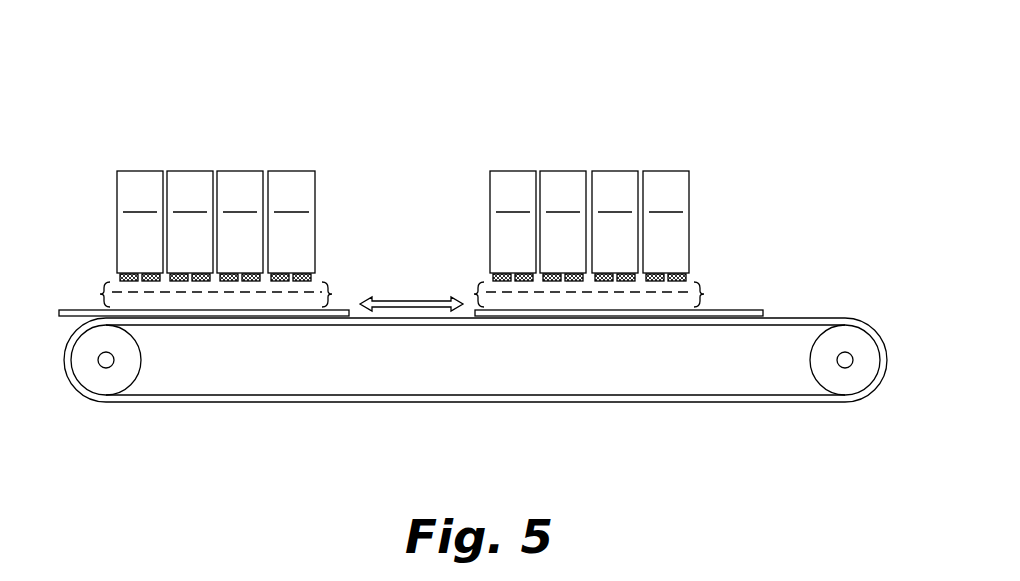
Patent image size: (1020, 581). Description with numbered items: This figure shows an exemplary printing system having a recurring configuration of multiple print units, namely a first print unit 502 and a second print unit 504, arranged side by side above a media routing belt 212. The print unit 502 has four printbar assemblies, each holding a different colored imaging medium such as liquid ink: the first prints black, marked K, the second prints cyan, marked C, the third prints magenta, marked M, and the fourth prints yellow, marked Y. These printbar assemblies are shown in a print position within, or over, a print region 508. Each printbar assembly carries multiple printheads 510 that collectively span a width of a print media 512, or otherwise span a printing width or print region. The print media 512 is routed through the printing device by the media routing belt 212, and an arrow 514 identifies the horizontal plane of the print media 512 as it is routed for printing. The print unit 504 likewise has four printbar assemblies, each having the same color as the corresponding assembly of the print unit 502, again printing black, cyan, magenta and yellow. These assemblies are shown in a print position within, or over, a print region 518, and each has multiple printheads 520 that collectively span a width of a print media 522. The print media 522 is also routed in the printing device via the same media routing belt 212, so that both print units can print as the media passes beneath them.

The media routing belt 212 is at (175, 403).
The print unit 502 is at (241, 145).
The print unit 504 is at (615, 145).
The print region 508 is at (260, 299).
The printheads 510 is at (305, 276).
The print media 512 is at (338, 306).
The arrow 514 is at (418, 305).
The print region 518 is at (595, 299).
The printheads 520 is at (684, 276).
The print media 522 is at (732, 310).